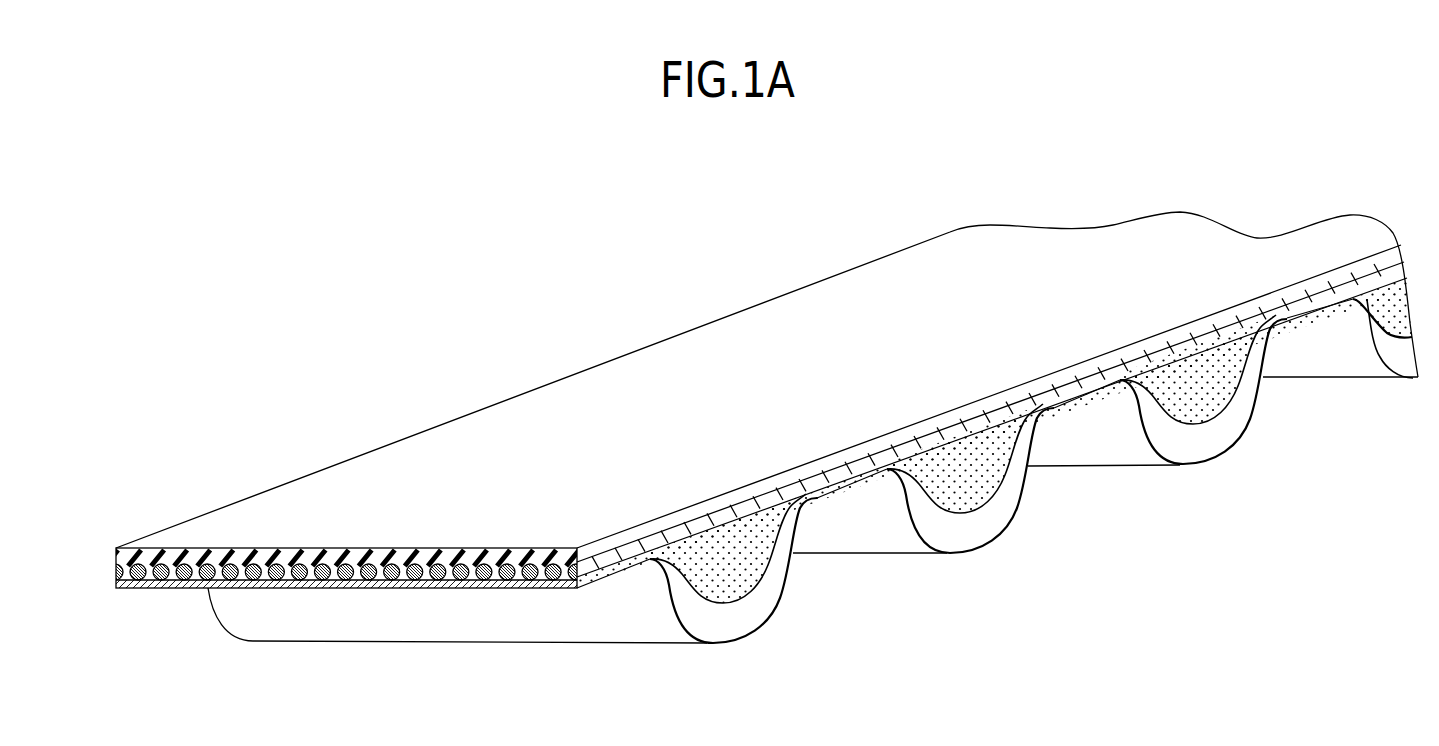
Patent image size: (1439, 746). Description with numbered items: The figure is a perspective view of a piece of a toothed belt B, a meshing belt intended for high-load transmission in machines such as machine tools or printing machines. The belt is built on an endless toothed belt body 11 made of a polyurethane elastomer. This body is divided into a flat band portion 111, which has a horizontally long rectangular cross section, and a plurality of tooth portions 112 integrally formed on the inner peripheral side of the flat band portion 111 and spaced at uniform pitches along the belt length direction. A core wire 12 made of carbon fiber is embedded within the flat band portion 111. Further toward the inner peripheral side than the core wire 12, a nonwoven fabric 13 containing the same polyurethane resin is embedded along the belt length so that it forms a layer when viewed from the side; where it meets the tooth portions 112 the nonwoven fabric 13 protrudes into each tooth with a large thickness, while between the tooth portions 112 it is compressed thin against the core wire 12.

The toothed belt B is at (674, 220).
The toothed belt body 11 is at (115, 560).
The flat band portion 111 is at (358, 556).
The tooth portions 112 is at (740, 617).
The core wire 12 is at (300, 561).
The nonwoven fabric 13 is at (350, 590).